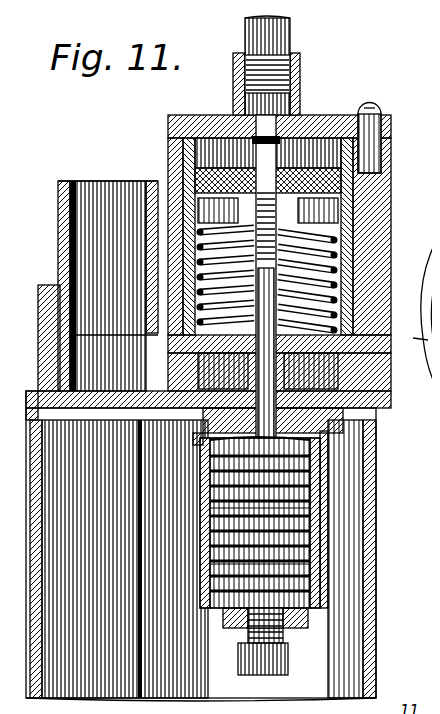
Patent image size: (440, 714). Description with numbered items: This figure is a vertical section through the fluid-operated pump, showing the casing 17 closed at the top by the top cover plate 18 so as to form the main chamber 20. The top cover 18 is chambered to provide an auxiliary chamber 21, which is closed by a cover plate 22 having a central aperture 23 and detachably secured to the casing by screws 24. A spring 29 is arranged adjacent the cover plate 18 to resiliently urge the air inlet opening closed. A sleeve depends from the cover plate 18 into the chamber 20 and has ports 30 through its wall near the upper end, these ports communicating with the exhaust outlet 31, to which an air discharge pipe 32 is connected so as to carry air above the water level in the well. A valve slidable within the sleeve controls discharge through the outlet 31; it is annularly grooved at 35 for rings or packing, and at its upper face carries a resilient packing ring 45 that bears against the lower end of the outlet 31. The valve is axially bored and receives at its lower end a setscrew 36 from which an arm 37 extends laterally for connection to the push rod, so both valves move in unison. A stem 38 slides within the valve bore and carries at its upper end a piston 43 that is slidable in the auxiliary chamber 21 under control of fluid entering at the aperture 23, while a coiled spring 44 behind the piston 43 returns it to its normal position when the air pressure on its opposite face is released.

The casing 17 is at (366, 541).
The top cover plate 18 is at (276, 30).
The main chamber 20 is at (345, 560).
The auxiliary chamber 21 is at (343, 227).
The cover plate 22 is at (302, 108).
The central aperture 23 is at (283, 62).
The screws 24 is at (364, 99).
The spring 29 is at (200, 510).
The ports 30 is at (190, 440).
The exhaust outlet 31 is at (280, 390).
The air discharge pipe 32 is at (80, 176).
The annular grooves 35 is at (200, 556).
The setscrew 36 is at (270, 668).
The arm 37 is at (300, 610).
The stem 38 is at (268, 372).
The piston 43 is at (176, 143).
The coiled spring 44 is at (320, 250).
The packing ring 45 is at (215, 434).